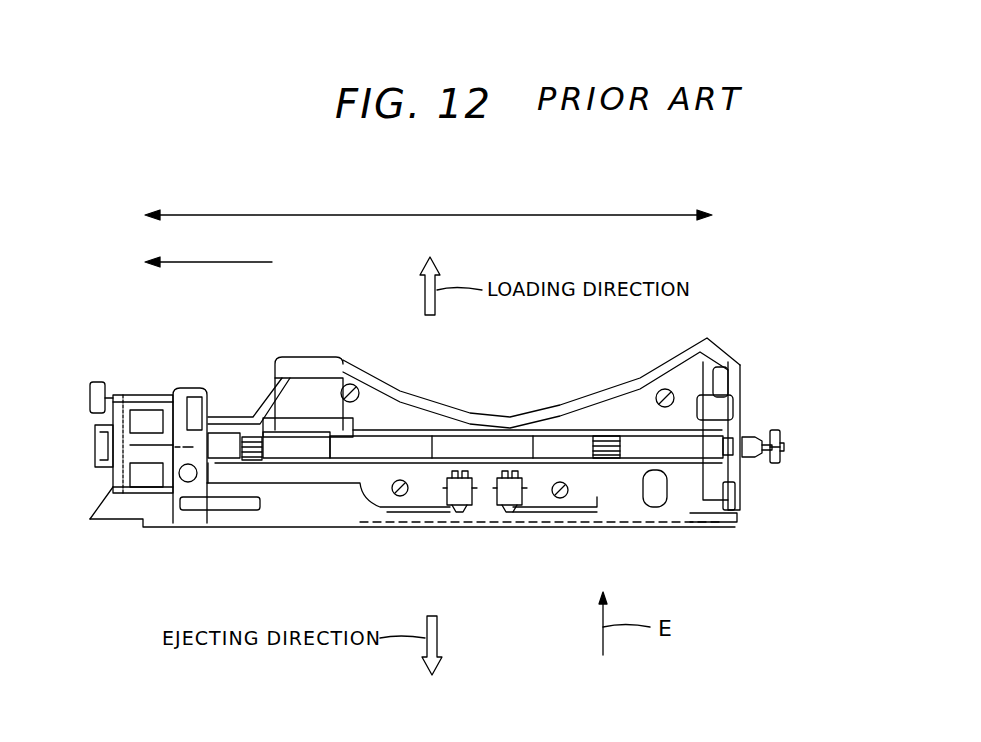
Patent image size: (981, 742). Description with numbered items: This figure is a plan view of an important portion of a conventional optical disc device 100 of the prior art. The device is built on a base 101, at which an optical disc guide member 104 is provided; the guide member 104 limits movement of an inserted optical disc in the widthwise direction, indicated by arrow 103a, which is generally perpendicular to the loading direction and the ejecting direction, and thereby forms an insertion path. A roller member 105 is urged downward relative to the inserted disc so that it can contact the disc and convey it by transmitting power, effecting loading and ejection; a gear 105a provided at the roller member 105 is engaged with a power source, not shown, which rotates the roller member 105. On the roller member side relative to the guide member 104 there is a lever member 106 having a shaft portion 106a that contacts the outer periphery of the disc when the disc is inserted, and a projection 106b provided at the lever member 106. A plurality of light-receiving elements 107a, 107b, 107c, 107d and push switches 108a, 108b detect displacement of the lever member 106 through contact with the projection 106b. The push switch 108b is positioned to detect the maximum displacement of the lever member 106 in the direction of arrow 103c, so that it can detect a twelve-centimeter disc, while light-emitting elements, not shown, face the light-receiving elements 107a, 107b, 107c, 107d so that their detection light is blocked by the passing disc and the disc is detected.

The optical disc device 100 is at (114, 328).
The base 101 is at (736, 498).
The widthwise direction arrow 103a is at (315, 216).
The direction of lever displacement arrow 103c is at (215, 263).
The optical disc guide member 104 is at (682, 510).
The roller member 105 is at (563, 445).
The gear 105a is at (775, 428).
The lever member 106 is at (290, 510).
The shaft portion 106a is at (188, 482).
The projection 106b is at (548, 520).
The light-receiving element 107a is at (400, 497).
The light-receiving element 107b is at (560, 499).
The light-receiving element 107c is at (358, 387).
The light-receiving element 107d is at (658, 392).
The push switch 108a is at (507, 512).
The push switch 108b is at (457, 512).